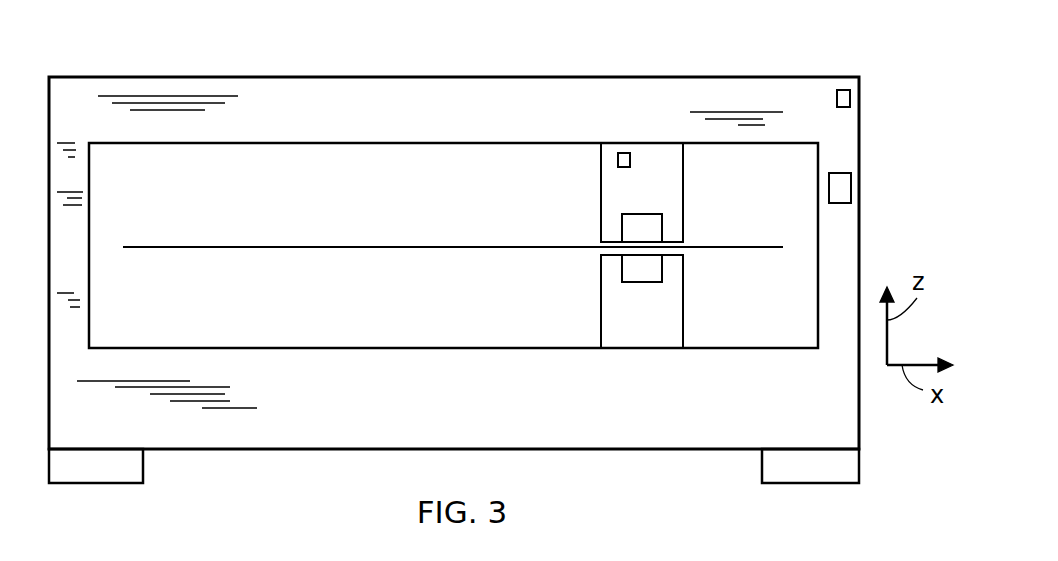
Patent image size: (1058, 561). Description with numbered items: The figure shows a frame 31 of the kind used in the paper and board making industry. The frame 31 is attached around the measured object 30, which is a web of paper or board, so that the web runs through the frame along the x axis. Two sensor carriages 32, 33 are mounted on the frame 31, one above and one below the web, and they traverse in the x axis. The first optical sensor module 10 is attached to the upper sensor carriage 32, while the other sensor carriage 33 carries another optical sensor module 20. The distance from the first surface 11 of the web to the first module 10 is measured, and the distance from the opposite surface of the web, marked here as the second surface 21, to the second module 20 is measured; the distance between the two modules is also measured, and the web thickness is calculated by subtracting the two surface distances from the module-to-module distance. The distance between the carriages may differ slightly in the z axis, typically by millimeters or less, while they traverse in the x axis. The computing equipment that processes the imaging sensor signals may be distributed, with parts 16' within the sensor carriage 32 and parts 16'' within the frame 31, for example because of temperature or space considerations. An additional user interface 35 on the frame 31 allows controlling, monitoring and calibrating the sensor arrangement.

The first optical sensor module 10 is at (662, 228).
The second optical sensor module 20 is at (662, 268).
The first surface 11 is at (194, 245).
The second measuring position 21 is at (188, 249).
The measured object 30 is at (332, 250).
The frame 31 is at (522, 77).
The sensor carriage 32 is at (600, 230).
The sensor carriage 33 is at (600, 337).
The user interface 35 is at (851, 175).
The distributed computing equipment 16' is at (648, 134).
The distributed computing equipment 16'' is at (871, 73).